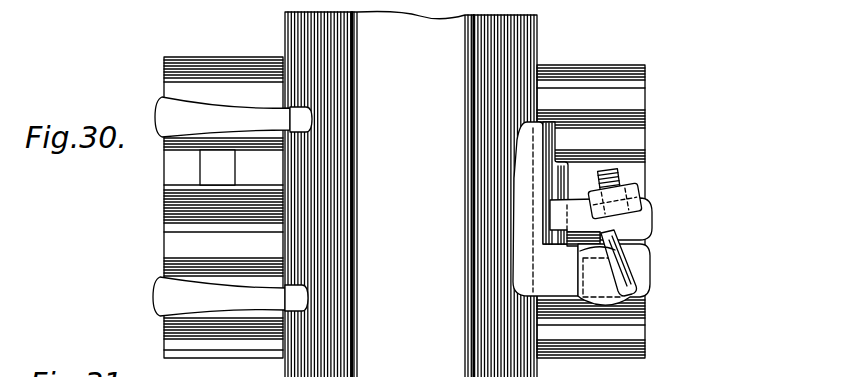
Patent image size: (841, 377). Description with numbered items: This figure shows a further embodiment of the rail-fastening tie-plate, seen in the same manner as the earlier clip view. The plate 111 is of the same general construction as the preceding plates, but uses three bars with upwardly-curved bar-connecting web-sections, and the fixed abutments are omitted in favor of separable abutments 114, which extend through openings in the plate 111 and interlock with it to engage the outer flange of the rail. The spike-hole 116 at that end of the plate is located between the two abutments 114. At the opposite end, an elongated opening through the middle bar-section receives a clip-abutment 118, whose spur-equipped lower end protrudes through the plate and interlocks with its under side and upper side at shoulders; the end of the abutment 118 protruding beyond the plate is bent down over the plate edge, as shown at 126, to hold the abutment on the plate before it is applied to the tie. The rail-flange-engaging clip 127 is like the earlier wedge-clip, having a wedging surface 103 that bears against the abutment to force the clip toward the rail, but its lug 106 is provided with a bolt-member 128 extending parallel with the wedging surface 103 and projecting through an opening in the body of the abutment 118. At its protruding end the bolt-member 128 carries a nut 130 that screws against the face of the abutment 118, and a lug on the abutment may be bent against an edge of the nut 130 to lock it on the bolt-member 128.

The wedging surface 103 is at (568, 182).
The lug 106 is at (607, 277).
The plate 111 is at (172, 250).
The separable abutments 114 is at (231, 120).
The spike-hole 116 is at (217, 165).
The clip-abutment 118 is at (630, 222).
The bent-down end of abutment 126 is at (645, 229).
The rail-flange-engaging clip 127 is at (545, 209).
The bolt-member 128 is at (612, 248).
The nut 130 is at (622, 186).